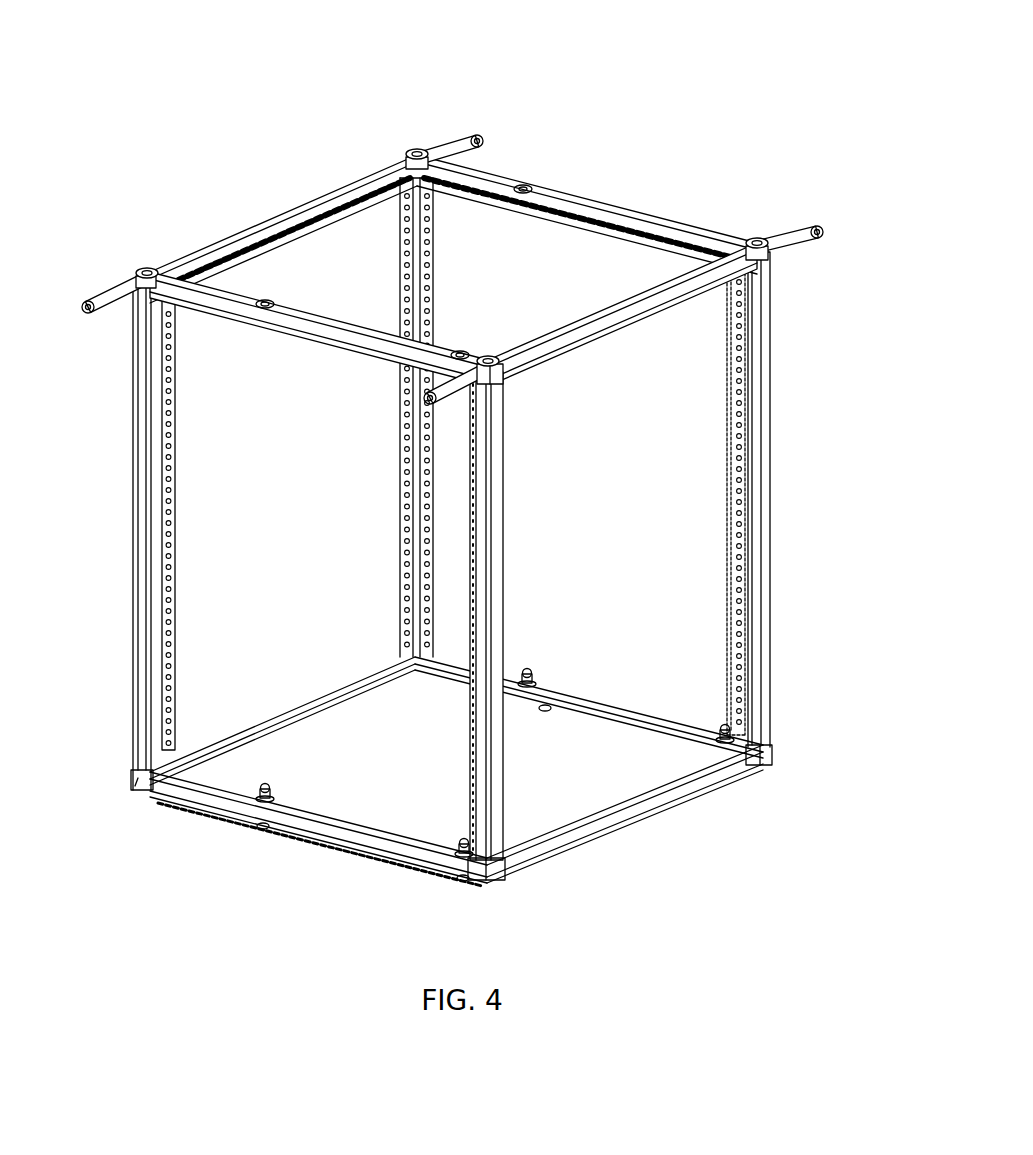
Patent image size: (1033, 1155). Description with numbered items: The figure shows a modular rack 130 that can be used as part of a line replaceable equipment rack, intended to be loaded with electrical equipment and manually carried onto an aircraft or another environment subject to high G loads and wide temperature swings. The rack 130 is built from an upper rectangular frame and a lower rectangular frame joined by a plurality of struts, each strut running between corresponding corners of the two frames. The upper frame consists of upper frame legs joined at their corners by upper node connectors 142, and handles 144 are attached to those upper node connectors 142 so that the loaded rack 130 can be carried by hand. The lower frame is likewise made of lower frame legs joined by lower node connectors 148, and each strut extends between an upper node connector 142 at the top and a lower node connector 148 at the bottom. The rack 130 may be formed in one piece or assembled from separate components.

The modular rack 130 is at (748, 43).
The upper node connector 142 is at (415, 150).
The handle 144 is at (493, 128).
The lower node connector 148 is at (133, 790).